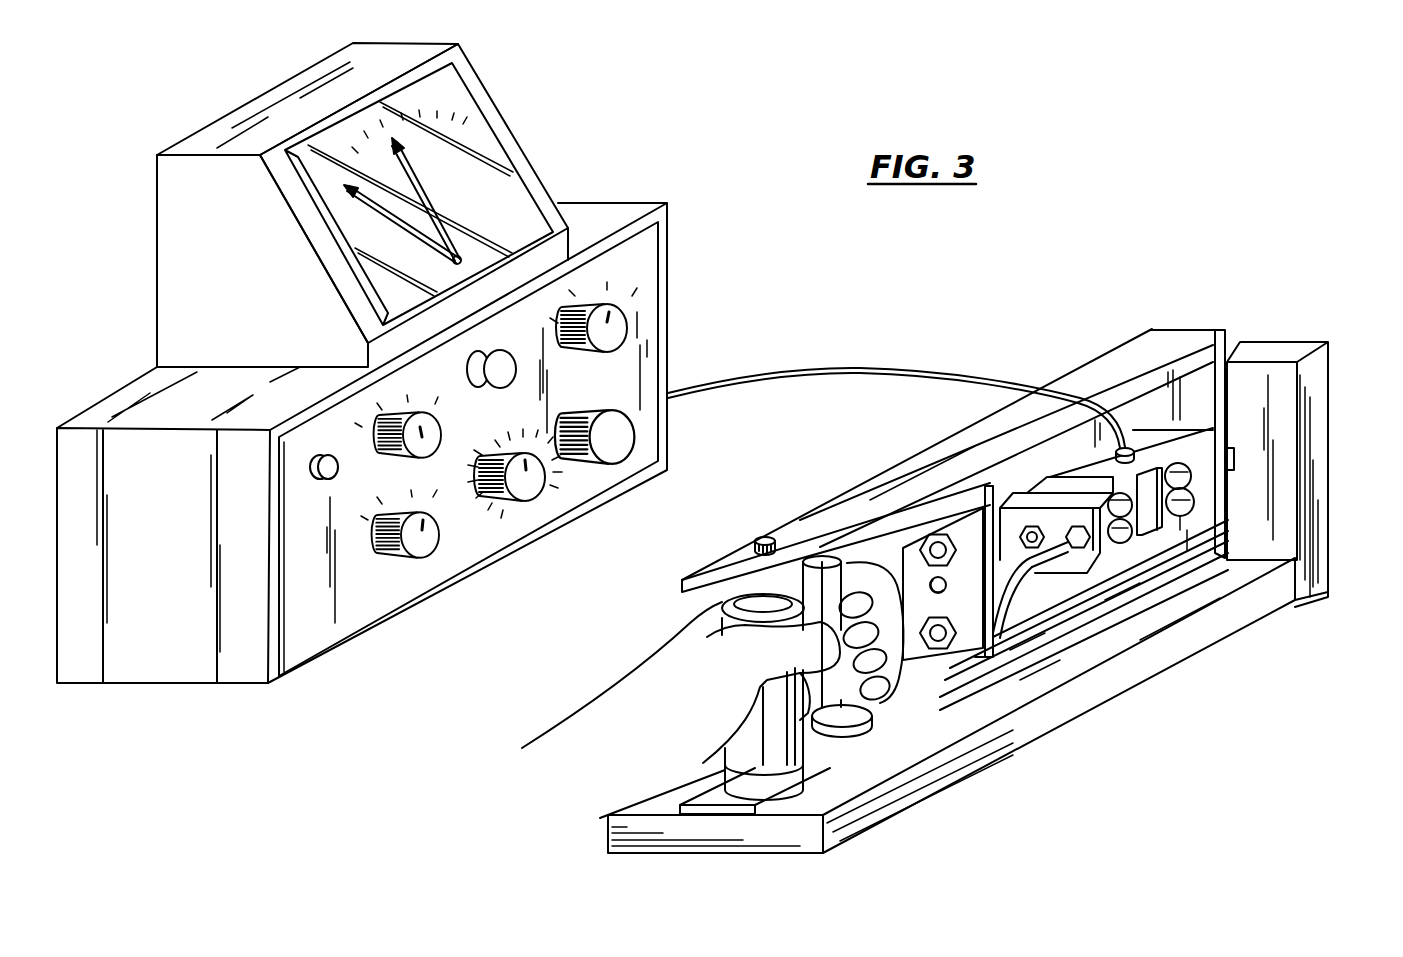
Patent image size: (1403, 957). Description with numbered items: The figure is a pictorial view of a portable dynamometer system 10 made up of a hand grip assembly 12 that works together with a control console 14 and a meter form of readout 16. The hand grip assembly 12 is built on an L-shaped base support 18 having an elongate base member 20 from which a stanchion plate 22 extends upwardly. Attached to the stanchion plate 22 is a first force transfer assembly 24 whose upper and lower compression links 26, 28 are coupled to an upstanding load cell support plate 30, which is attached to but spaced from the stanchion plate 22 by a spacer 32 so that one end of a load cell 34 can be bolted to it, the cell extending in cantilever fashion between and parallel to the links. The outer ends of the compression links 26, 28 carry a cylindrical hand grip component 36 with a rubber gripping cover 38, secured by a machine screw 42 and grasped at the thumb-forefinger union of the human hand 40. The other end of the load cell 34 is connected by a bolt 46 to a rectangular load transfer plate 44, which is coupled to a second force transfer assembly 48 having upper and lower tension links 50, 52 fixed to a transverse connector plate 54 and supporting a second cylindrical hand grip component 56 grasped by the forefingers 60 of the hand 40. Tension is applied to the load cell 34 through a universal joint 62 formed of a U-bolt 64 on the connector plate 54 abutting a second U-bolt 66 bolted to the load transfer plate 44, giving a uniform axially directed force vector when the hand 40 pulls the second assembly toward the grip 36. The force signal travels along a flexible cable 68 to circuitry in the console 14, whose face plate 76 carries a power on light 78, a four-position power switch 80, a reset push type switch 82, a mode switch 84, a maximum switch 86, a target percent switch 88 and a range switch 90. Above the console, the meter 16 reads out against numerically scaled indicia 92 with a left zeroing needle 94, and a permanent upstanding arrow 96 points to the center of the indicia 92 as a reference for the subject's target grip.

The portable dynamometer system 10 is at (1164, 221).
The hand grip assembly 12 is at (1334, 301).
The control console 14 is at (690, 300).
The meter 16 is at (534, 118).
The L-shaped base support 18 is at (1165, 736).
The elongate base member 20 is at (866, 820).
The stanchion plate 22 is at (1315, 500).
The first force transfer assembly 24 is at (1198, 318).
The upper compression link 26 is at (900, 477).
The lower compression link 28 is at (833, 747).
The load cell support plate 30 is at (1205, 380).
The spacer 32 is at (1237, 460).
The load cell 34 is at (1205, 449).
The cylindrical hand grip component 36 is at (758, 596).
The rubber gripping cover 38 is at (720, 625).
The human hand 40 is at (640, 700).
The machine screw 42 is at (757, 542).
The load transfer plate 44 is at (1150, 548).
The bolt 46 is at (983, 477).
The second force transfer assembly 48 is at (988, 462).
The upper tension link 50 is at (872, 530).
The lower tension link 52 is at (962, 692).
The connector plate 54 is at (985, 645).
The hand grip component 56 is at (837, 578).
The forefingers 60 is at (898, 690).
The universal joint 62 is at (1051, 521).
The U-bolt 64 is at (1000, 605).
The U-bolt 66 is at (1088, 565).
The flexible cable 68 is at (832, 368).
The face plate 76 is at (650, 363).
The power on light 78 is at (333, 475).
The power switch 80 is at (432, 438).
The push type switch 82 is at (503, 360).
The mode switch 84 is at (585, 352).
The maximum switch 86 is at (608, 452).
The target percent switch 88 is at (523, 487).
The range switch 90 is at (411, 558).
The numerically scaled indicia 92 is at (456, 110).
The left zeroing needle 94 is at (362, 208).
The upstanding arrow 96 is at (425, 197).